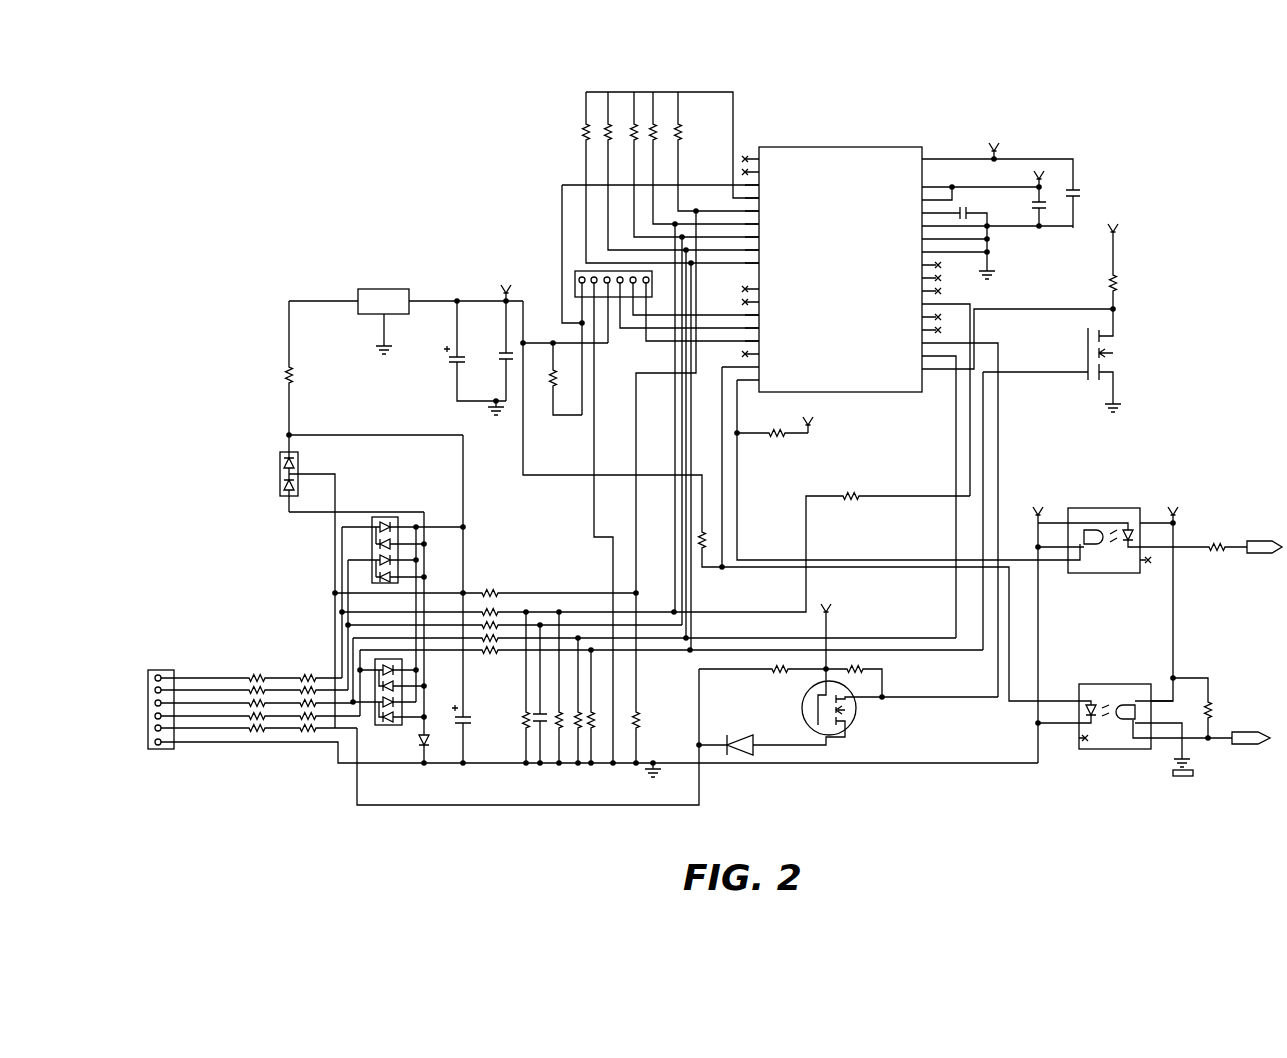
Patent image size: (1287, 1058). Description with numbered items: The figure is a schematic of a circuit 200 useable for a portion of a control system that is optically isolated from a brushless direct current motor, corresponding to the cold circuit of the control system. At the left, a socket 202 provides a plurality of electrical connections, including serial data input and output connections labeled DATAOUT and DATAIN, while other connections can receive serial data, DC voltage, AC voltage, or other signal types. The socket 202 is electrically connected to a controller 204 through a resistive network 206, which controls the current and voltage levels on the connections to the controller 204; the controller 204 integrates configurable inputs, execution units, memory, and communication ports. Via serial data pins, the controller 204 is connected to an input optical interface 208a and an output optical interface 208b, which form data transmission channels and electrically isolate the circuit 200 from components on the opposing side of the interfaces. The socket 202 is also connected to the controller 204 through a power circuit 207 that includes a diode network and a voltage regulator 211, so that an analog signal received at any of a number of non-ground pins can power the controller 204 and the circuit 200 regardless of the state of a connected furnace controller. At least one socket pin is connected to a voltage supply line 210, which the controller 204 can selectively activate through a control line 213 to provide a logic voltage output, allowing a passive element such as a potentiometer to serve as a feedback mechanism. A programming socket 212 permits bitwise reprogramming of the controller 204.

The circuit 200 is at (264, 823).
The socket 202 is at (163, 668).
The controller 204 is at (818, 147).
The resistive network 206 is at (280, 621).
The power circuit 207 is at (245, 266).
The input optical interface 208a is at (1104, 507).
The output optical interface 208b is at (1119, 683).
The voltage supply line 210 is at (493, 805).
The voltage regulator 211 is at (362, 262).
The programming socket 212 is at (580, 275).
The control line 213 is at (912, 697).